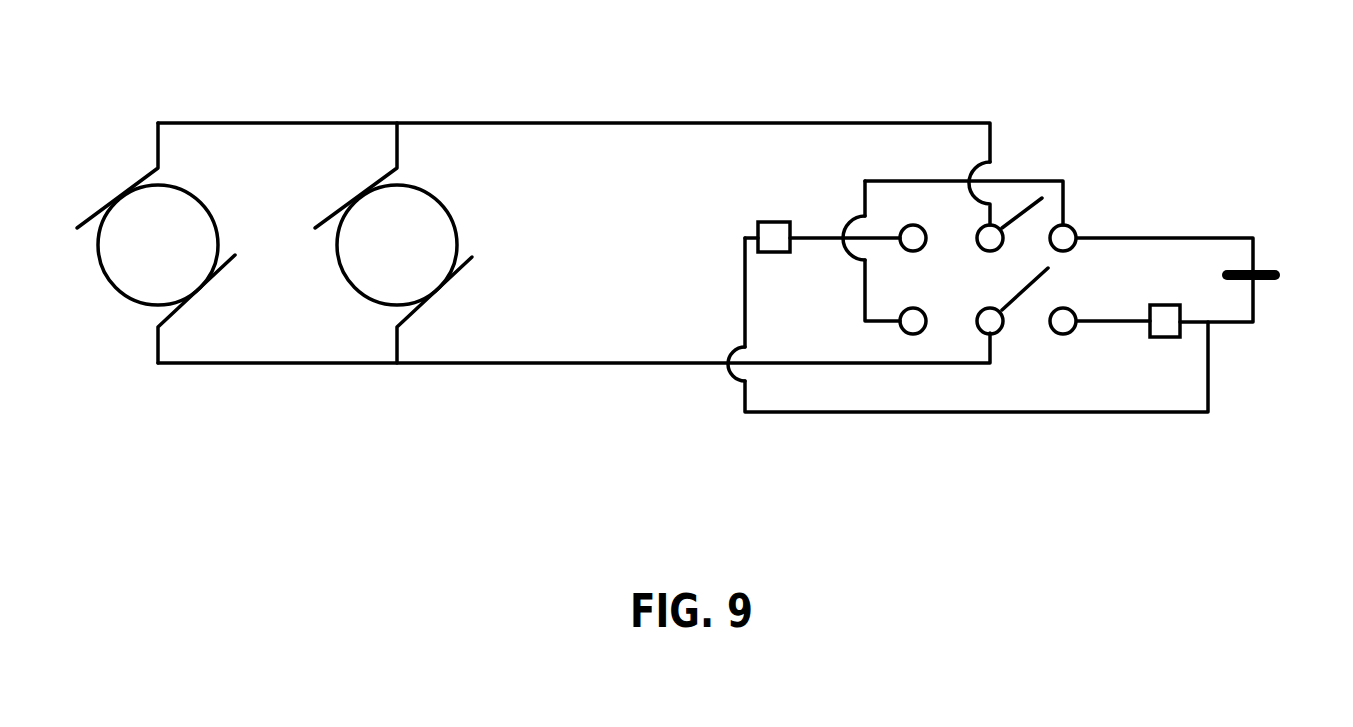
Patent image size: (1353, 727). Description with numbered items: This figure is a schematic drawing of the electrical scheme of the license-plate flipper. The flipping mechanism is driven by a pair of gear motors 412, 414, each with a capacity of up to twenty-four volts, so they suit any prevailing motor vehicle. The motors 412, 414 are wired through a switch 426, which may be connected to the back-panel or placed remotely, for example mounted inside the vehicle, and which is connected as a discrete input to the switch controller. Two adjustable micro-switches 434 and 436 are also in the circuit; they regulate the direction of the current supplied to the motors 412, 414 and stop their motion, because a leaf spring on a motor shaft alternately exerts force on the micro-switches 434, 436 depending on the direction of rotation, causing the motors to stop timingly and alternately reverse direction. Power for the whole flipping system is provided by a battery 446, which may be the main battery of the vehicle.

The gear motor 414 is at (158, 242).
The gear motor 412 is at (397, 242).
The switch 426 is at (922, 207).
The micro-switch 434 is at (757, 220).
The micro-switch 436 is at (1183, 327).
The battery 446 is at (1268, 270).